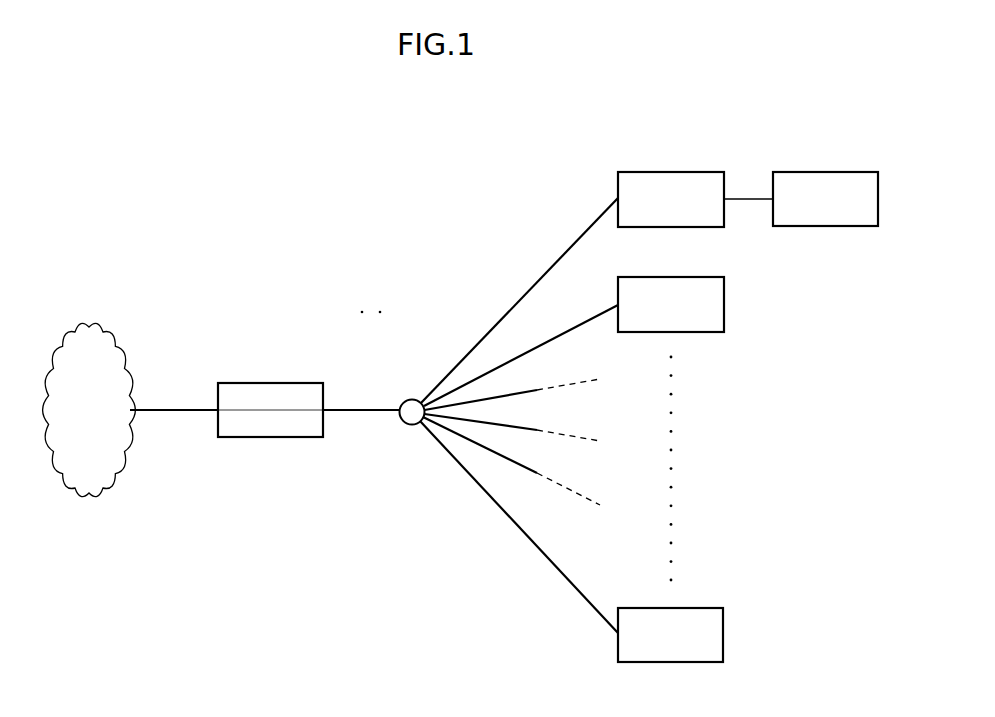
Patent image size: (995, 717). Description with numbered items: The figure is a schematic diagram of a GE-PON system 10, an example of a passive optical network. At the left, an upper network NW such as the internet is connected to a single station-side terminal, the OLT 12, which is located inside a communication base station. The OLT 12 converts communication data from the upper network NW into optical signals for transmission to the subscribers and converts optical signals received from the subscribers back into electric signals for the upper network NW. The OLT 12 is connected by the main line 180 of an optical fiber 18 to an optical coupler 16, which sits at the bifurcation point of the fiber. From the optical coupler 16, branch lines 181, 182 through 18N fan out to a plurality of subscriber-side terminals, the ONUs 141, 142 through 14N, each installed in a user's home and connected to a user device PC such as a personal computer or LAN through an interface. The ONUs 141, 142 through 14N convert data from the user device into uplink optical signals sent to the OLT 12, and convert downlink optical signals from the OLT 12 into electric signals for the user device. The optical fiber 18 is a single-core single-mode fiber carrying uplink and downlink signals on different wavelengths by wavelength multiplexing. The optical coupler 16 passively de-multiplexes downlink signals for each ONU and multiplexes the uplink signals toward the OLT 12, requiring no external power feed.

The GE-PON system 10 is at (477, 173).
The station-side terminal (OLT) 12 is at (270, 437).
The subscriber-side terminal (ONU) 141 is at (712, 172).
The subscriber-side terminal (ONU) 142 is at (712, 277).
The subscriber-side terminal (ONU) 14N is at (712, 608).
The optical coupler 16 is at (415, 425).
The optical fiber 18 is at (470, 293).
The main line 180 is at (363, 408).
The branch line 181 is at (457, 385).
The branch line 182 is at (438, 362).
The branch line 18N is at (420, 392).